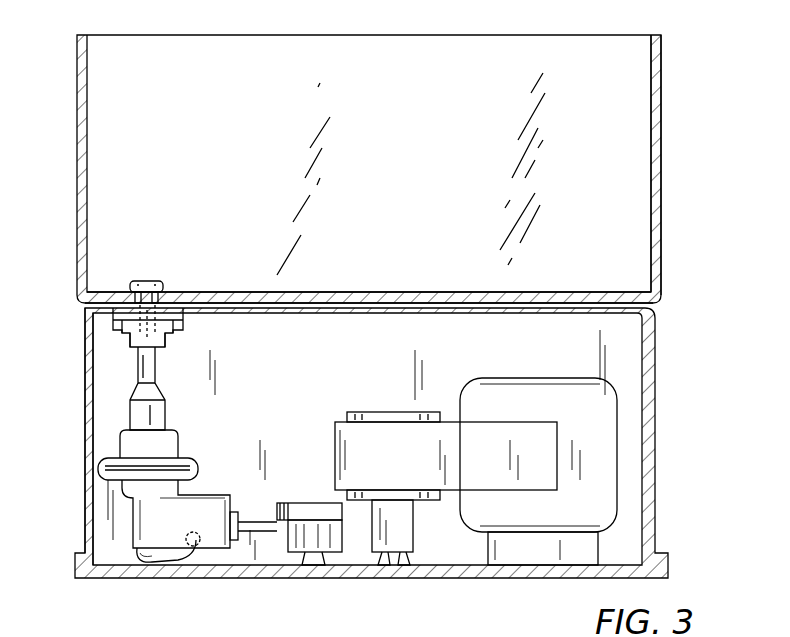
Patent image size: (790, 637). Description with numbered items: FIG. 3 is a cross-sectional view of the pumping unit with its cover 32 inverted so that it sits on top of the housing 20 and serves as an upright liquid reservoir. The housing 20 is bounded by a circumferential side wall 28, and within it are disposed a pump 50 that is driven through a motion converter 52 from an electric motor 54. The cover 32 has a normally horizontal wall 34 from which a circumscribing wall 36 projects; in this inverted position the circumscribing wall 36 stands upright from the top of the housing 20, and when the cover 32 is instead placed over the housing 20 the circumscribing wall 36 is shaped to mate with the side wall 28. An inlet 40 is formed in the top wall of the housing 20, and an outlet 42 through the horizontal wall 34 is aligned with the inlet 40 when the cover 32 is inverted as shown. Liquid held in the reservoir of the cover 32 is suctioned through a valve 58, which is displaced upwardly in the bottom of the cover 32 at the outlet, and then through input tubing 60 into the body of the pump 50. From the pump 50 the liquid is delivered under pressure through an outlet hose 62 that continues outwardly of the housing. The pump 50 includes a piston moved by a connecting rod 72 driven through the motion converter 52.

The housing 20 is at (656, 467).
The side wall 28 is at (85, 392).
The cover 32 is at (660, 179).
The horizontal wall 34 is at (632, 290).
The circumscribing wall 36 is at (78, 176).
The inlet 40 is at (174, 334).
The outlet 42 is at (162, 290).
The pump 50 is at (212, 493).
The motion converter 52 is at (382, 409).
The electric motor 54 is at (560, 356).
The valve 58 is at (165, 291).
The input tubing 60 is at (157, 370).
The outlet hose 62 is at (178, 572).
The coupling 72 is at (271, 505).